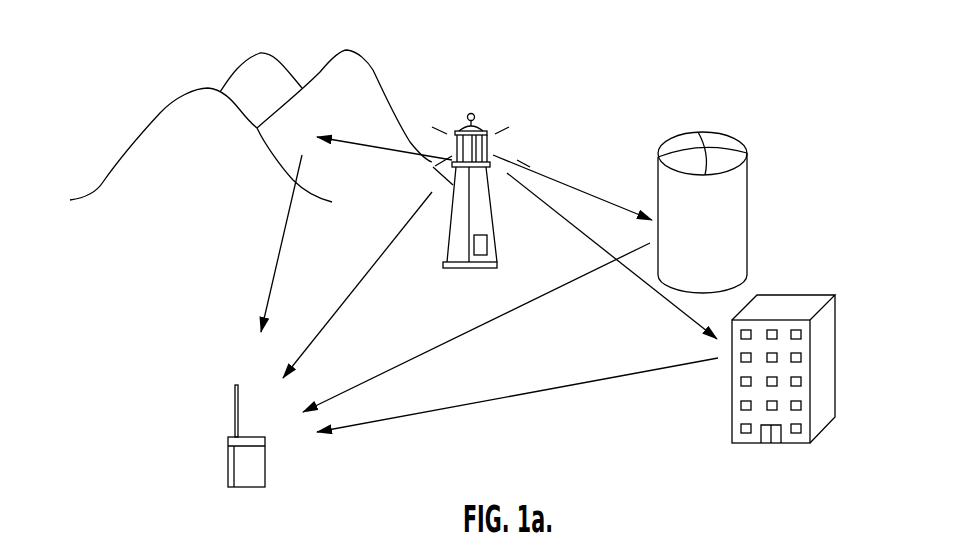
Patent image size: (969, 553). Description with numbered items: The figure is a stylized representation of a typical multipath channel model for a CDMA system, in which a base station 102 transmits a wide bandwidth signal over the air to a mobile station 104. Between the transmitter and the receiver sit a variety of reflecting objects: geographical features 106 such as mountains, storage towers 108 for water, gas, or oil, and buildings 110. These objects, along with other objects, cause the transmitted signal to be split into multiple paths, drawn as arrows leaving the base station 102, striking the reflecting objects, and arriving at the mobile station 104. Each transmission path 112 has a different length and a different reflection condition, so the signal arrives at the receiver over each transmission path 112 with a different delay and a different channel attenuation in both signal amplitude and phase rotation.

The base station 102 is at (480, 122).
The mobile station 104 is at (266, 468).
The geographical features 106 is at (362, 53).
The storage towers 108 is at (723, 140).
The buildings 110 is at (818, 293).
The transmission path 112 is at (378, 257).